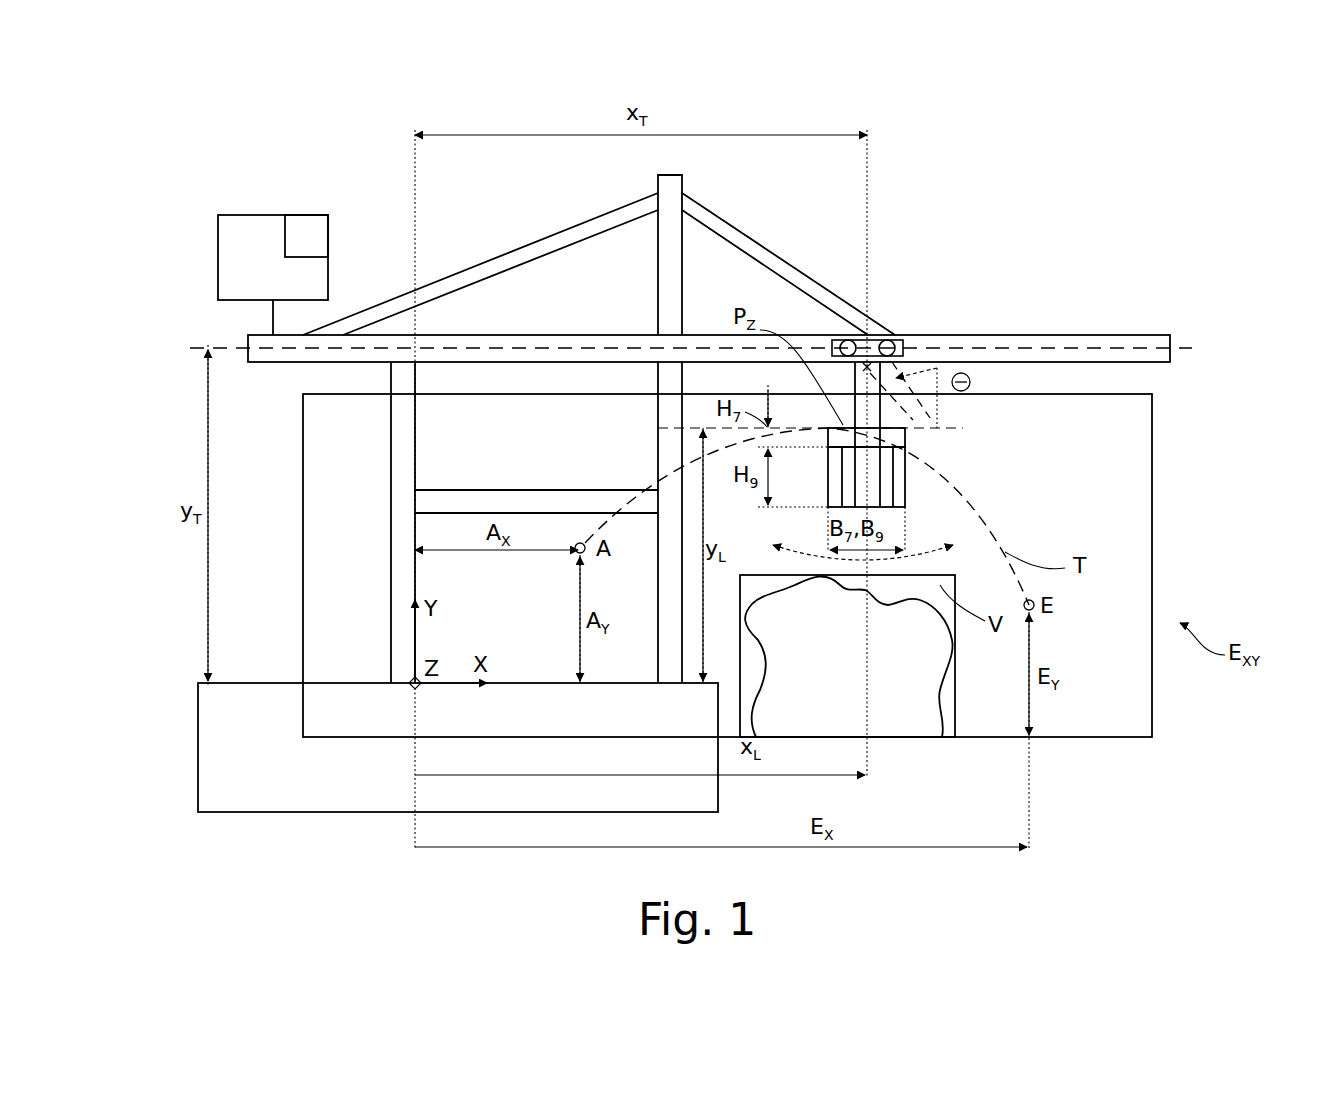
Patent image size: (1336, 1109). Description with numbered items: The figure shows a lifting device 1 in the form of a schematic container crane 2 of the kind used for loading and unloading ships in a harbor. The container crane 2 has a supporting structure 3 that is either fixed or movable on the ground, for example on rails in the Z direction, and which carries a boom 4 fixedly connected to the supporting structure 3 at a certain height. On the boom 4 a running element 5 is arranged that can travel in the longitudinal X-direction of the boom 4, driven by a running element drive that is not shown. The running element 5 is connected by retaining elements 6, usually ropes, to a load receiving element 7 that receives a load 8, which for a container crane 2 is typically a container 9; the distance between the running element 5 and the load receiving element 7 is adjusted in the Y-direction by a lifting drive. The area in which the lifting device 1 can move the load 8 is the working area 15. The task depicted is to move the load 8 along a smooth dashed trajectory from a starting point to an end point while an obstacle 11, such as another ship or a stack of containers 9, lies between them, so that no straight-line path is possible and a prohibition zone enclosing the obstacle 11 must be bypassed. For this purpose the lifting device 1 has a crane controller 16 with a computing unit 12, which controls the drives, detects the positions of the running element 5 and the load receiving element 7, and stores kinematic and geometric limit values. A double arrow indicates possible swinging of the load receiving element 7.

The lifting device 1 is at (657, 401).
The container crane 2 is at (224, 184).
The supporting structure 3 is at (400, 447).
The boom 4 is at (1080, 348).
The running element 5 is at (845, 341).
The retaining elements 6 is at (876, 346).
The load receiving element 7 is at (908, 440).
The load 8 is at (946, 492).
The container 9 is at (895, 485).
The obstacle 11 is at (838, 686).
The computing unit 12 is at (306, 240).
The working area 15 is at (1152, 683).
The crane controller 16 is at (236, 268).